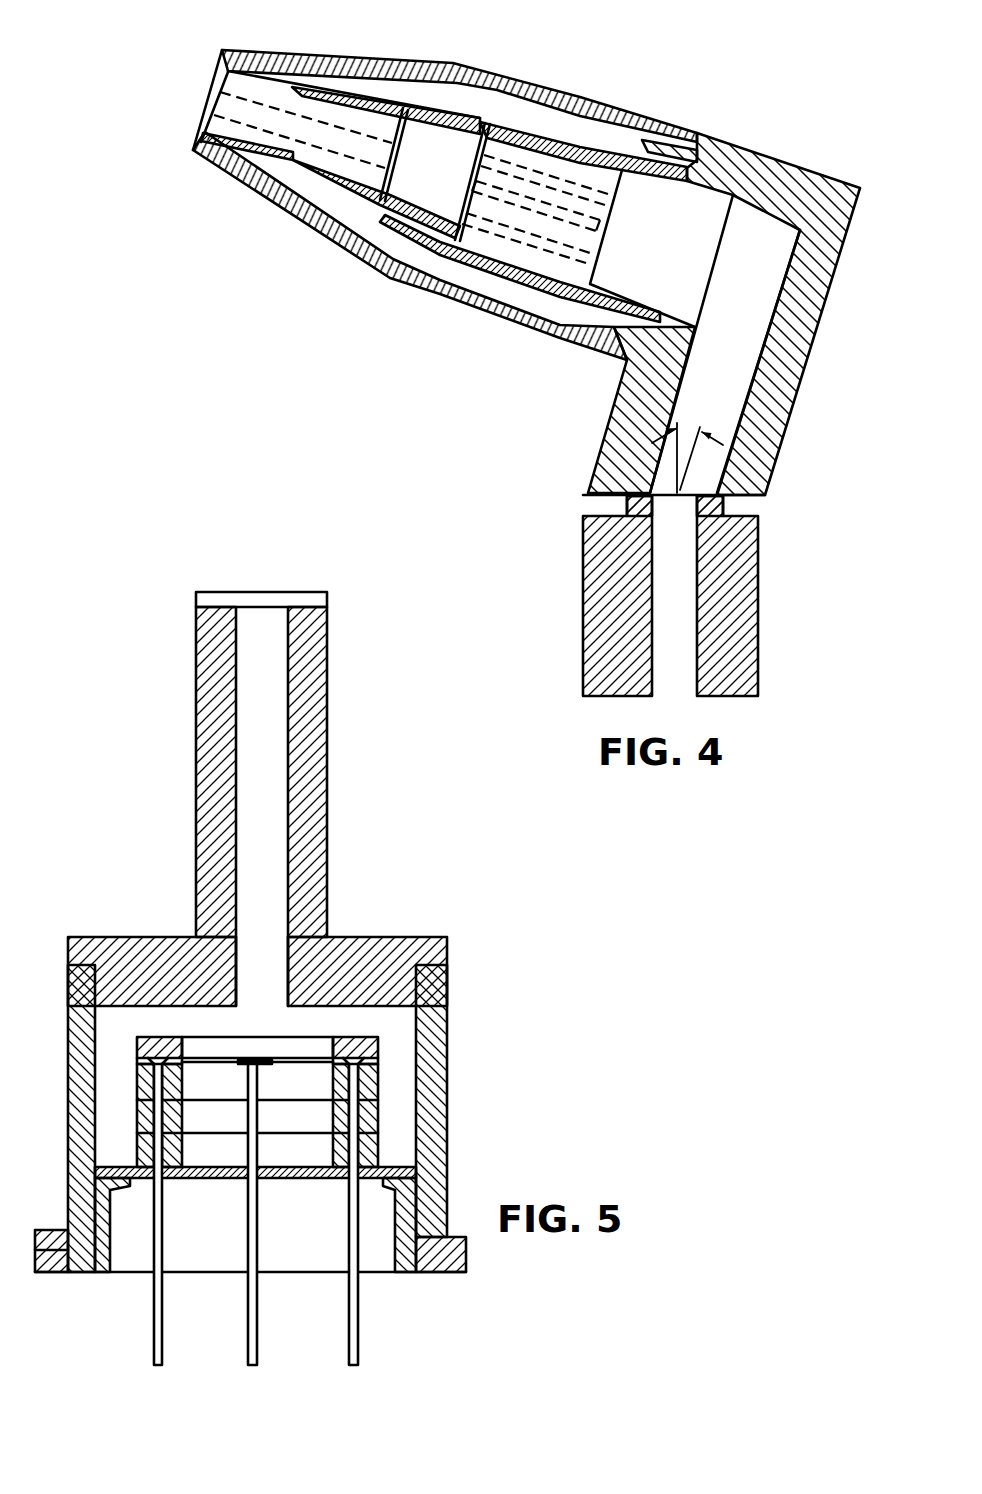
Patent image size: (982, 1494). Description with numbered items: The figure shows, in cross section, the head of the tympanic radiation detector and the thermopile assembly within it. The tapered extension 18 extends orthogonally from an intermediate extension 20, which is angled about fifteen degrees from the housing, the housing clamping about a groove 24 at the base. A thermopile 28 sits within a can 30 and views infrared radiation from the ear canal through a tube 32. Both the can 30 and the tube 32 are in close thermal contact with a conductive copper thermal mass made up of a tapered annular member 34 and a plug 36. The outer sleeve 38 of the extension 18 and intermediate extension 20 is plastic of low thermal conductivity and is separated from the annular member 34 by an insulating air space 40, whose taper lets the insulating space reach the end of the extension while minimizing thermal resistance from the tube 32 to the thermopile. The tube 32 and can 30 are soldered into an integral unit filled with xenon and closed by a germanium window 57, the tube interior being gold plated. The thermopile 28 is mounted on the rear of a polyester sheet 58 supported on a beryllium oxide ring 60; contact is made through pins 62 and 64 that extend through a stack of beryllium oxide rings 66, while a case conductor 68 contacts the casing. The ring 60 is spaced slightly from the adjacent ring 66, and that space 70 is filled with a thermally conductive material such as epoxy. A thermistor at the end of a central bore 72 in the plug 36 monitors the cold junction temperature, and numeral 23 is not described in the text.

In FIG. 4, the extension 18 is at (571, 86).
In FIG. 4, the intermediate extension 20 is at (806, 387).
In FIG. 4, the cylindrical fitting 23 is at (760, 614).
In FIG. 4, the groove 24 is at (725, 507).
In FIG. 4, the thermopile 28 is at (413, 165).
In FIG. 5, the thermopile 28 is at (243, 1064).
In FIG. 4, the can 30 is at (365, 255).
In FIG. 5, the can 30 is at (445, 1089).
In FIG. 4, the tube 32 is at (257, 148).
In FIG. 5, the tube 32 is at (328, 732).
In FIG. 4, the annular member 34 is at (433, 102).
In FIG. 4, the plug 36 is at (483, 263).
In FIG. 4, the outer sleeve 38 is at (653, 120).
In FIG. 4, the insulating air space 40 is at (583, 133).
In FIG. 5, the germanium window 57 is at (275, 592).
In FIG. 5, the polyester sheet 58 is at (303, 1057).
In FIG. 5, the beryllium oxide ring 60 is at (383, 1048).
In FIG. 5, the pin 62 is at (150, 1303).
In FIG. 5, the pin 64 is at (355, 1343).
In FIG. 5, the beryllium oxide rings 66 is at (378, 1152).
In FIG. 5, the case conductor 68 is at (246, 1302).
In FIG. 5, the space 70 is at (378, 1067).
In FIG. 4, the central bore 72 is at (527, 217).